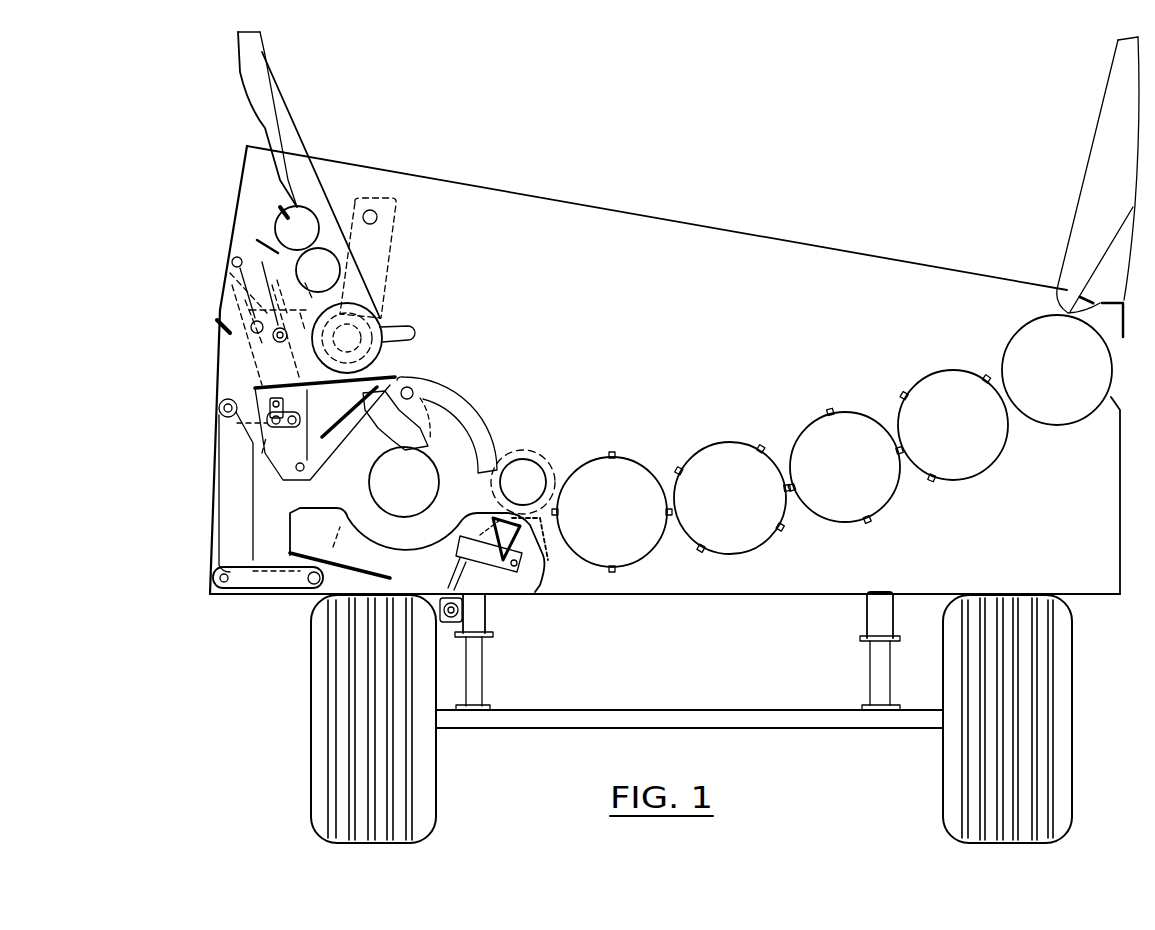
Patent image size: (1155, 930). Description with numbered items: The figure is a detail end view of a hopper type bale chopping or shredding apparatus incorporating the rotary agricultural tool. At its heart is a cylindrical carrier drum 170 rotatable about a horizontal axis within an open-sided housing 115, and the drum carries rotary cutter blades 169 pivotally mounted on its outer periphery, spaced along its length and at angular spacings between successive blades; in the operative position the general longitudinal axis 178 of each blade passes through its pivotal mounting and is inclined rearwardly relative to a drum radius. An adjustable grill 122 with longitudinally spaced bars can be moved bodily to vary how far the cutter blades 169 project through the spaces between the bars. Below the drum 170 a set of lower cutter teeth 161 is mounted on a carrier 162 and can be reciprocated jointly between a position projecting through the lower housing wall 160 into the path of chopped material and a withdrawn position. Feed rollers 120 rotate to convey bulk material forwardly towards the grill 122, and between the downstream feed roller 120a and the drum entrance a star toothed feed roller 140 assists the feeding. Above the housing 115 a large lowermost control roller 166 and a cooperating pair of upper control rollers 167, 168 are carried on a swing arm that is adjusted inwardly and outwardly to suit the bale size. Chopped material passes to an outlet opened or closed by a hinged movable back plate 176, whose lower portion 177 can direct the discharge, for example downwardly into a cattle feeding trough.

The open-sided housing 115 is at (330, 388).
The feed rollers 120 is at (880, 490).
The downstream feed roller 120a is at (673, 458).
The adjustable grill 122 is at (549, 464).
The star toothed feed roller 140 is at (640, 472).
The lower housing wall 160 is at (357, 560).
The lower cutter teeth 161 is at (518, 540).
The carrier 162 is at (497, 575).
The large lowermost control roller 166 is at (382, 316).
The upper control roller 167 is at (322, 268).
The upper control roller 168 is at (300, 220).
The rotary cutter blades 169 is at (400, 417).
The cylindrical carrier drum 170 is at (426, 485).
The movable back plate 176 is at (213, 450).
The lower portion of the back plate 177 is at (275, 590).
The longitudinal axis of the blade 178 is at (543, 520).